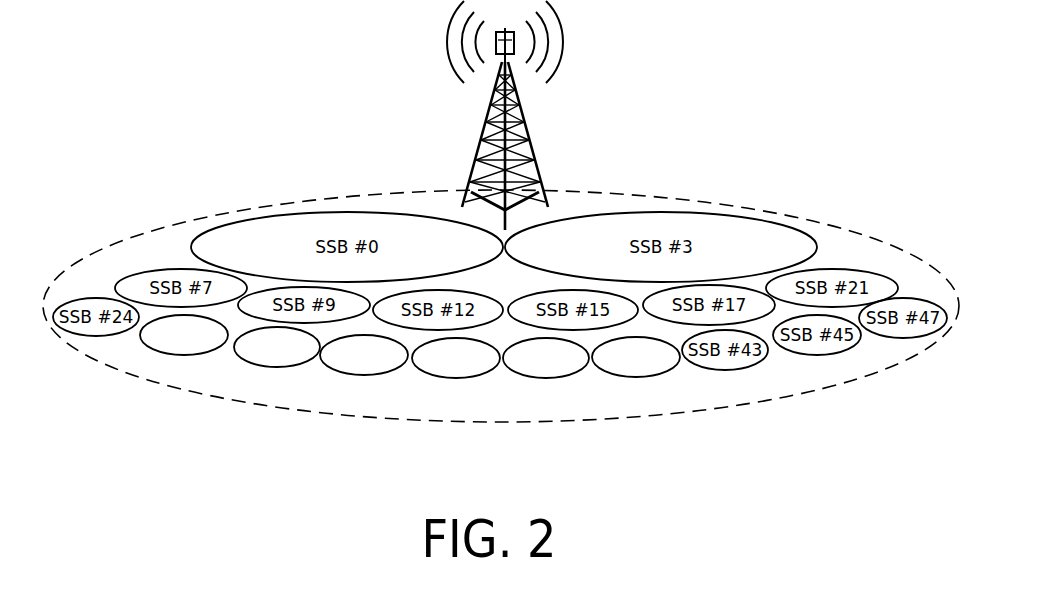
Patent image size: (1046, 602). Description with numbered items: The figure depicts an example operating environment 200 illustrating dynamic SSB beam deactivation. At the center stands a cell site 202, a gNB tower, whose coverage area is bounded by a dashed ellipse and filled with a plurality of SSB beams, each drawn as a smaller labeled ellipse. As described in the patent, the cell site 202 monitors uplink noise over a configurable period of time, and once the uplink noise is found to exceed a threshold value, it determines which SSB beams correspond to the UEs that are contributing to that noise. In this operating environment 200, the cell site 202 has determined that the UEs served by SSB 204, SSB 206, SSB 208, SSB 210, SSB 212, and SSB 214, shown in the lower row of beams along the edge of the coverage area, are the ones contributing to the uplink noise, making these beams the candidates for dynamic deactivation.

The operating environment 200 is at (157, 100).
The cell site 202 is at (480, 152).
The SSB 204 is at (184, 355).
The SSB 206 is at (278, 367).
The SSB 208 is at (363, 375).
The SSB 210 is at (455, 378).
The SSB 212 is at (545, 378).
The SSB 214 is at (635, 377).